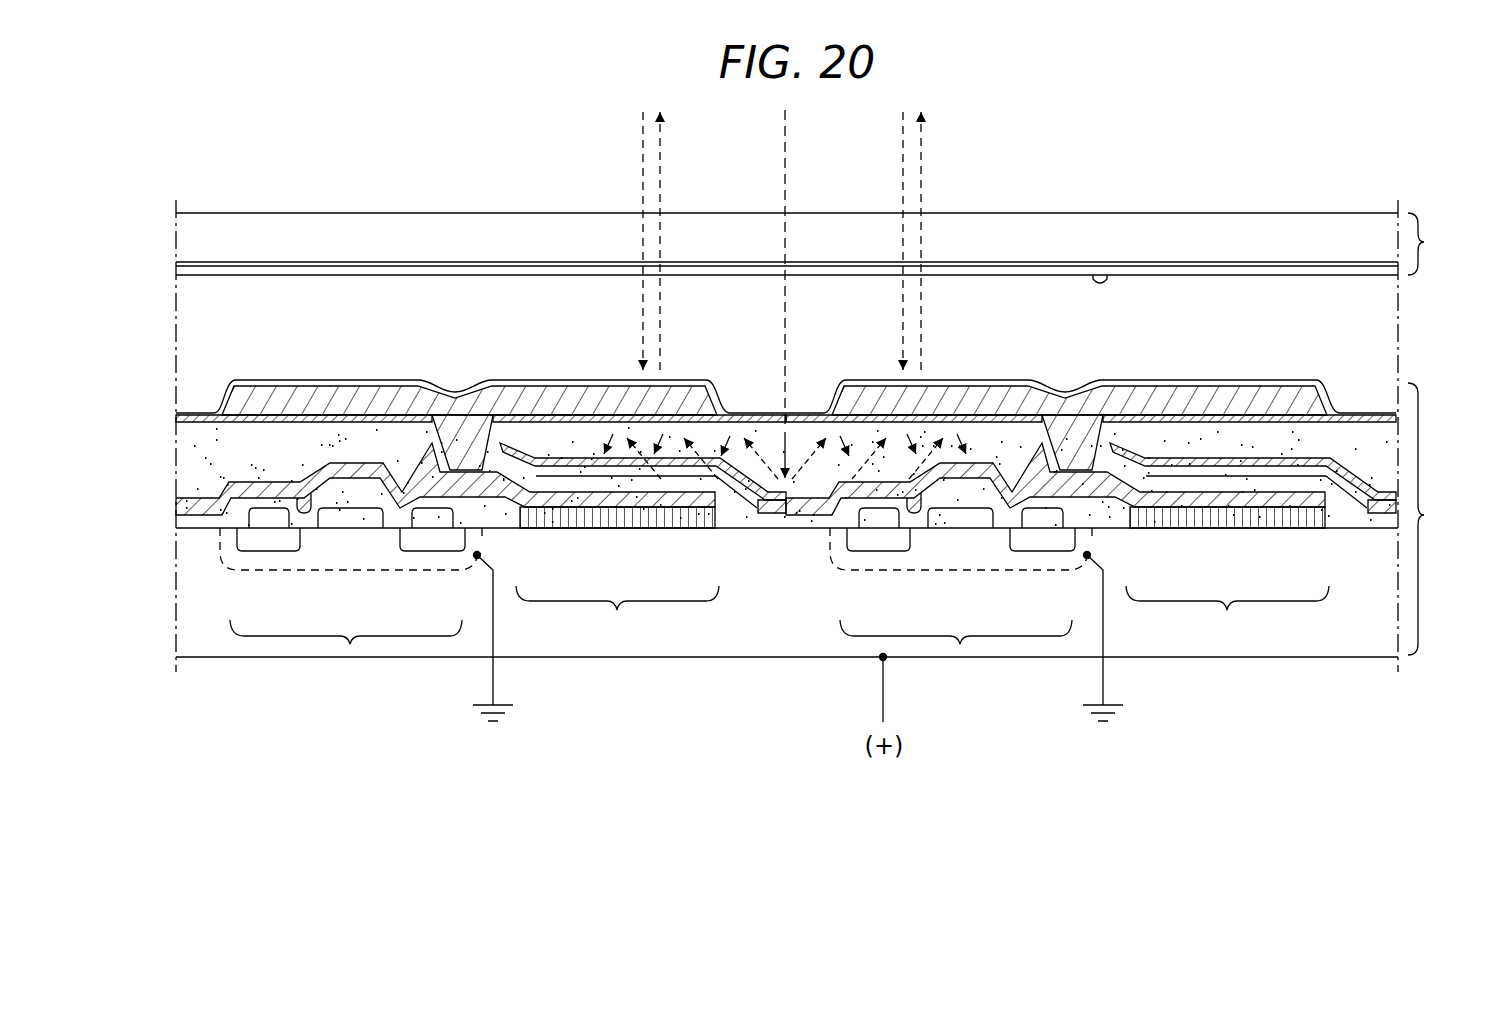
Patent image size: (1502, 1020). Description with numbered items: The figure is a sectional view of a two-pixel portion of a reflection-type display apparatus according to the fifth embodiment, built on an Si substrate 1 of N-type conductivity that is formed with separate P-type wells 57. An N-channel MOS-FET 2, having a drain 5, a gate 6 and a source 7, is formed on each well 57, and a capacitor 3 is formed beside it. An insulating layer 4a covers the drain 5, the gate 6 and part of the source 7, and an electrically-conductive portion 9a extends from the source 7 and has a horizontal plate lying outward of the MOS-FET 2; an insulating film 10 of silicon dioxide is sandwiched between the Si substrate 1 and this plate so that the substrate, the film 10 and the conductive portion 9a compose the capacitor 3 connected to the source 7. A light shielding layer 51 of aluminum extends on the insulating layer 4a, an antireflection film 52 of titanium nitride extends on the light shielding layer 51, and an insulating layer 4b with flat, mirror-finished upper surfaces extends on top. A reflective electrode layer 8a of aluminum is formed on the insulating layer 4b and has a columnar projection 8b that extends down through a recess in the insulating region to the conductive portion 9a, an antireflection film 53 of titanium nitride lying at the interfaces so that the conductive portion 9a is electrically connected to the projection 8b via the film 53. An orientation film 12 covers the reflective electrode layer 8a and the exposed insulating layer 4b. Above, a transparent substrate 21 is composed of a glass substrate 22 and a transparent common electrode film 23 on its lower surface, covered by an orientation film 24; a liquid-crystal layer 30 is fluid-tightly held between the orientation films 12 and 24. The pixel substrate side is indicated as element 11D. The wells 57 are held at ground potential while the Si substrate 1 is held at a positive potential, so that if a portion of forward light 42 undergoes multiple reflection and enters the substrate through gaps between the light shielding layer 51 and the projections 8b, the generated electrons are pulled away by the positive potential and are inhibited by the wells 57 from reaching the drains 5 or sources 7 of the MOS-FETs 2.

The Si substrate 1 is at (688, 656).
The MOS-FET 2 is at (350, 645).
The capacitor 3 is at (617, 611).
The insulating layer 4a is at (827, 528).
The insulating layer 4b is at (745, 455).
The drain 5 is at (263, 543).
The gate 6 is at (350, 530).
The source 7 is at (418, 543).
The reflective electrode layer 8a is at (495, 383).
The projection 8b is at (442, 386).
The electrically-conductive portion 9a is at (503, 530).
The insulating film 10 is at (663, 528).
The active matrix substrate 11D is at (1426, 515).
The orientation film 12 is at (555, 380).
The transparent substrate 21 is at (1428, 242).
The glass substrate 22 is at (975, 225).
The common electrode film 23 is at (1043, 262).
The orientation film 24 is at (1100, 275).
The liquid-crystal layer 30 is at (1372, 340).
The forward light 42 is at (788, 187).
The light shielding layer 51 is at (763, 528).
The antireflection film 52 is at (793, 528).
The antireflection film 53 is at (352, 418).
The P-type well 57 is at (238, 573).